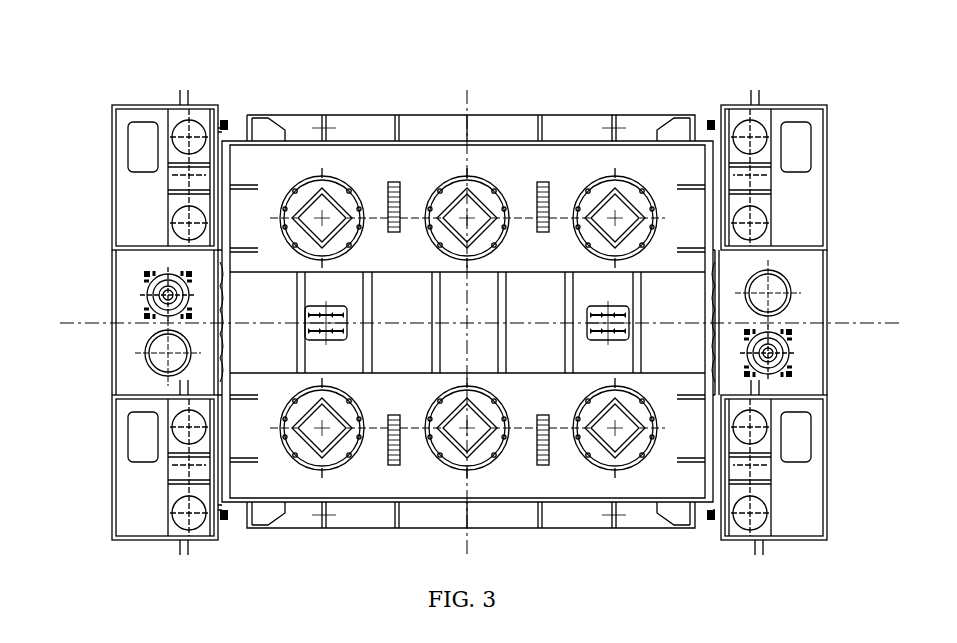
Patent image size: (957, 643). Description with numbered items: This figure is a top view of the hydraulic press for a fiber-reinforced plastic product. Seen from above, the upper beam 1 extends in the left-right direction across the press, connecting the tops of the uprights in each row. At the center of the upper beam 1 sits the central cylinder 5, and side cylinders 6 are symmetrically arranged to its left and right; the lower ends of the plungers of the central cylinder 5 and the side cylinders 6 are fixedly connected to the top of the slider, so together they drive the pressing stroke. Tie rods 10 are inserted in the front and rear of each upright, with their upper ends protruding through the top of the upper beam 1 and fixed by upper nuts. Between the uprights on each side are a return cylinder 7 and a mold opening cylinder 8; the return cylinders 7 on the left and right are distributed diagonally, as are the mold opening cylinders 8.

The upper beam 1 is at (560, 175).
The central cylinder 5 is at (470, 185).
The side cylinder 6 is at (325, 185).
The return cylinder 7 is at (160, 343).
The mold opening cylinder 8 is at (160, 286).
The tie rod 10 is at (192, 128).